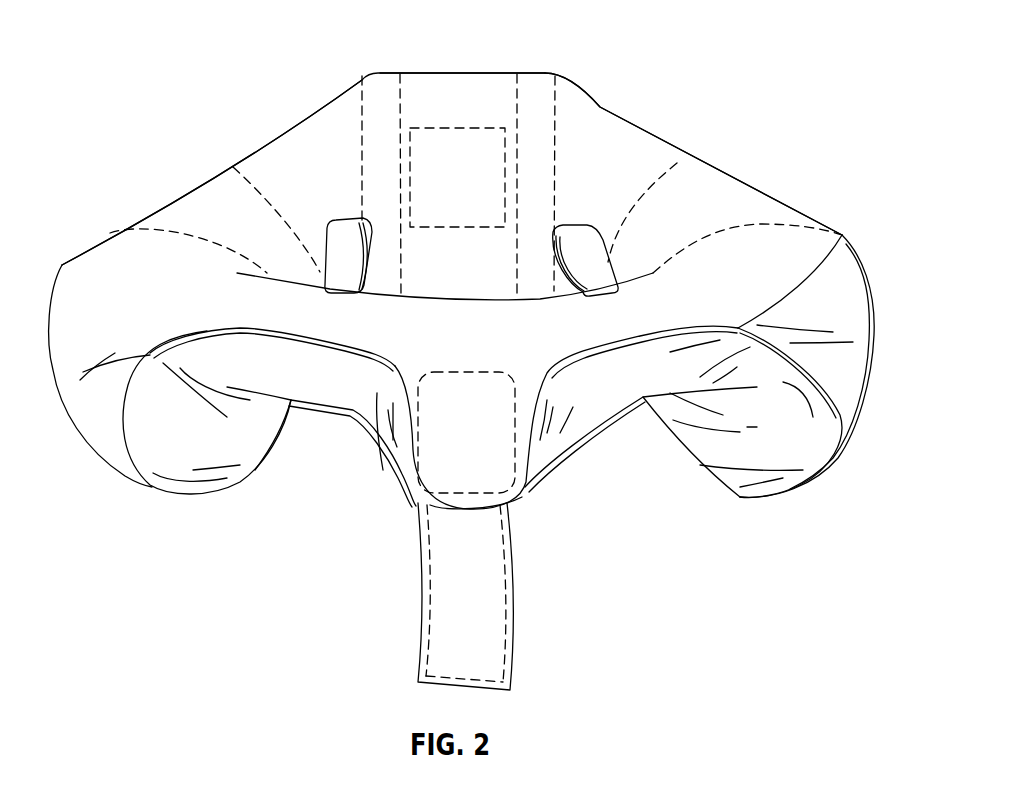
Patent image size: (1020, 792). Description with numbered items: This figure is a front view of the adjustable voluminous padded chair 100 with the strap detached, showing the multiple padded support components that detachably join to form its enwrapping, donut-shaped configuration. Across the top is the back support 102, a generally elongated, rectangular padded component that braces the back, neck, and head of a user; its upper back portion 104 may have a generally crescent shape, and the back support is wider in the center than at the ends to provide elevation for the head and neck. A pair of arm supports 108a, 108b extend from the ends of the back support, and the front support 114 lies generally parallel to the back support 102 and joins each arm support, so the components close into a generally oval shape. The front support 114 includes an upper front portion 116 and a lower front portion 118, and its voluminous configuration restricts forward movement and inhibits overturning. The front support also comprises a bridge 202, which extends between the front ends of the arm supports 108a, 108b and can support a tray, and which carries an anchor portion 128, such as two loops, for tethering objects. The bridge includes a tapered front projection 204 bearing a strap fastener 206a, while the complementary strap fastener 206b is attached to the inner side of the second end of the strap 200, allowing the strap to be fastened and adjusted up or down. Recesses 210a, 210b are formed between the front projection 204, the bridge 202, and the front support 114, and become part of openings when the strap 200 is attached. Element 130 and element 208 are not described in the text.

The chair 100 is at (177, 77).
The back support 102 is at (482, 115).
The upper back portion 104 is at (504, 82).
The arm support 108a is at (163, 199).
The arm support 108b is at (733, 185).
The front support 114 is at (227, 315).
The upper front portion 116 is at (98, 262).
The lower front portion 118 is at (127, 476).
The anchor portion 128 is at (350, 218).
The second side lobe 130 is at (842, 236).
The strap 200 is at (515, 590).
The bridge 202 is at (482, 353).
The front projection 204 is at (530, 478).
The strap fastener 206a is at (425, 458).
The strap fastener 206b is at (467, 653).
The neck opening / seam 208 is at (332, 494).
The recess 210a is at (294, 443).
The recess 210b is at (623, 426).